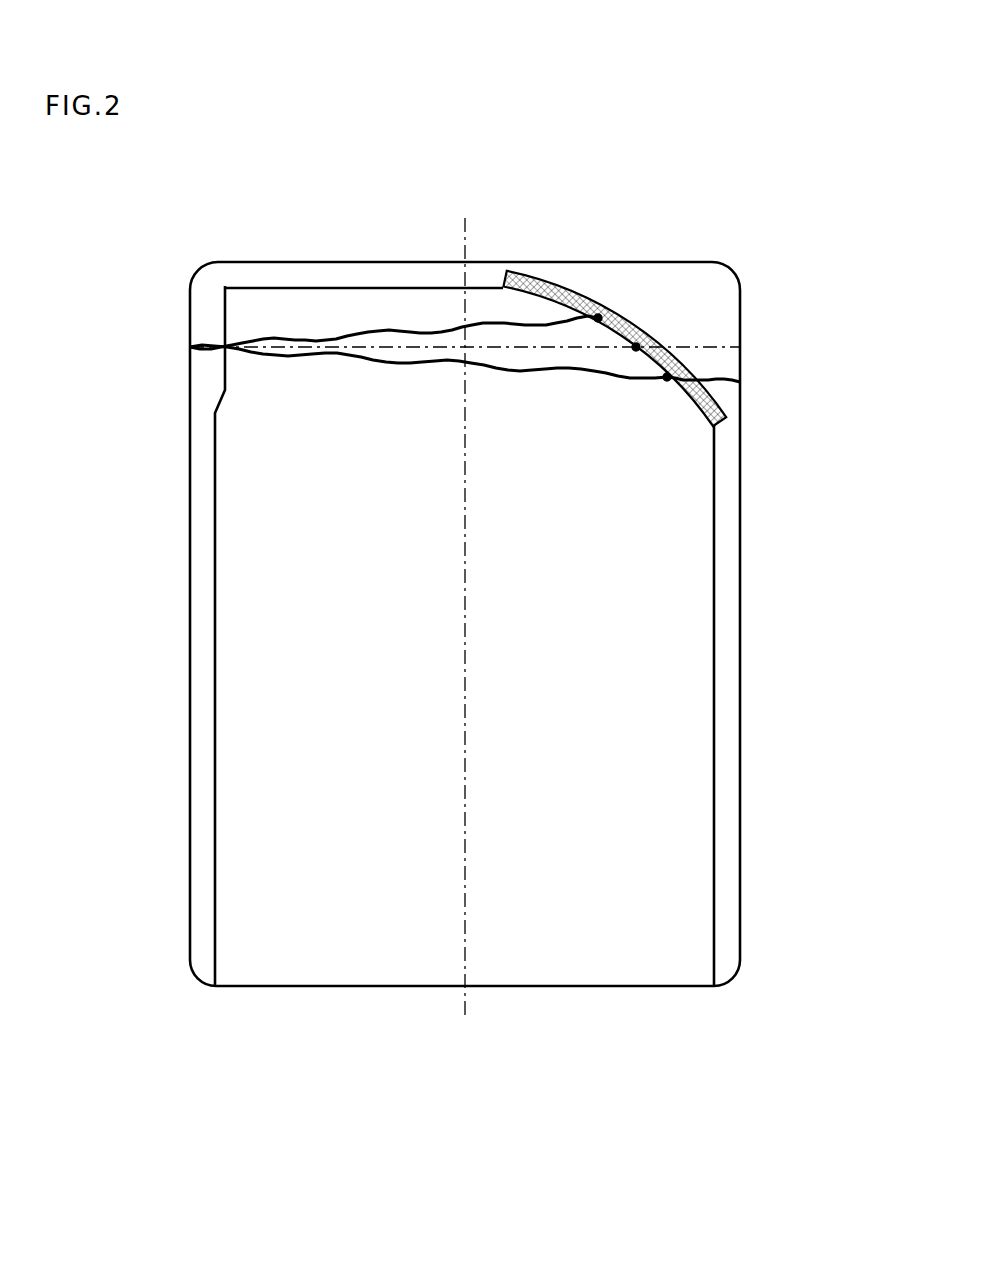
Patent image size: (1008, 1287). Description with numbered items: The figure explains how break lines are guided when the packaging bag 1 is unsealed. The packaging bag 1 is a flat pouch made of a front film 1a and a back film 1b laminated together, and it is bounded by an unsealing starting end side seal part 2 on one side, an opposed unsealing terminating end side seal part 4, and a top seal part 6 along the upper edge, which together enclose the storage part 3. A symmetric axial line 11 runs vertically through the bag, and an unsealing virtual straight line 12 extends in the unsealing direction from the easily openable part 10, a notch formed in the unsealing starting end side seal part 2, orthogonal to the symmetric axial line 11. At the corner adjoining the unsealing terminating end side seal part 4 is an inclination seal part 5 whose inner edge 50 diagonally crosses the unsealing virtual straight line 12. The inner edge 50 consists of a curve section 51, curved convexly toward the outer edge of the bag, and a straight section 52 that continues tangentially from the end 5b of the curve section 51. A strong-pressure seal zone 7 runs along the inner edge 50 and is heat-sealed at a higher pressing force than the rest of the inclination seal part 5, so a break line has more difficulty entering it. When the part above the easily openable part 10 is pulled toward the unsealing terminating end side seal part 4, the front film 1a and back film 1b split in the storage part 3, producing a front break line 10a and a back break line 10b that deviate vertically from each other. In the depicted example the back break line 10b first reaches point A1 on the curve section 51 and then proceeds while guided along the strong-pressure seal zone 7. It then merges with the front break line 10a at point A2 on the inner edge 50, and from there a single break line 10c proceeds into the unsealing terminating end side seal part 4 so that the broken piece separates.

The packaging bag 1 is at (742, 758).
The front film 1a is at (293, 822).
The back film 1b is at (293, 903).
The unsealing starting end side seal part 2 is at (203, 705).
The storage part 3 is at (293, 620).
The unsealing terminating end side seal part 4 is at (728, 672).
The inclination seal part 5 is at (713, 288).
The end of the curve section 5b is at (633, 348).
The top seal part 6 is at (267, 277).
The strong-pressure seal zone 7 is at (533, 280).
The easily openable part 10 is at (473, 272).
The front break line 10a is at (338, 357).
The back break line 10b is at (413, 327).
The break line 10c is at (707, 380).
The symmetric axial line 11 is at (465, 945).
The unsealing virtual straight line 12 is at (367, 352).
The inner edge of the inclination seal part 50 is at (690, 405).
The curve section 51 is at (583, 305).
The straight section 52 is at (687, 380).
The point A1 is at (598, 318).
The point A2 is at (667, 377).